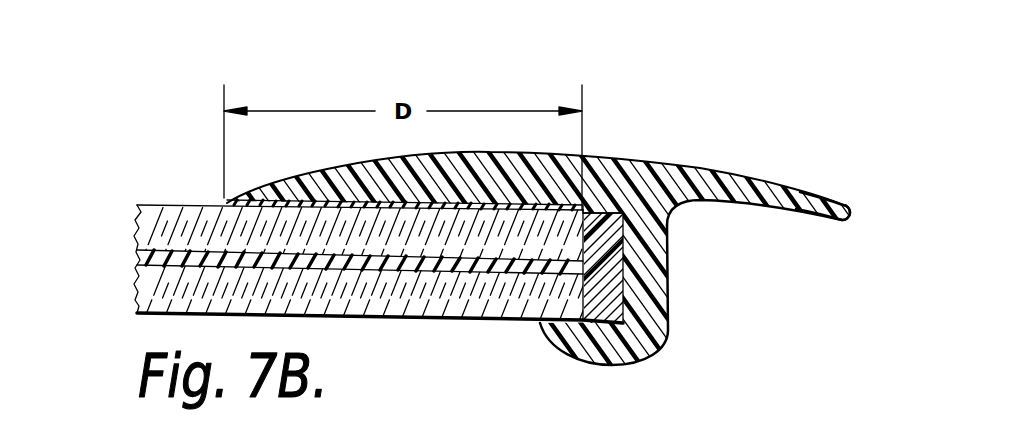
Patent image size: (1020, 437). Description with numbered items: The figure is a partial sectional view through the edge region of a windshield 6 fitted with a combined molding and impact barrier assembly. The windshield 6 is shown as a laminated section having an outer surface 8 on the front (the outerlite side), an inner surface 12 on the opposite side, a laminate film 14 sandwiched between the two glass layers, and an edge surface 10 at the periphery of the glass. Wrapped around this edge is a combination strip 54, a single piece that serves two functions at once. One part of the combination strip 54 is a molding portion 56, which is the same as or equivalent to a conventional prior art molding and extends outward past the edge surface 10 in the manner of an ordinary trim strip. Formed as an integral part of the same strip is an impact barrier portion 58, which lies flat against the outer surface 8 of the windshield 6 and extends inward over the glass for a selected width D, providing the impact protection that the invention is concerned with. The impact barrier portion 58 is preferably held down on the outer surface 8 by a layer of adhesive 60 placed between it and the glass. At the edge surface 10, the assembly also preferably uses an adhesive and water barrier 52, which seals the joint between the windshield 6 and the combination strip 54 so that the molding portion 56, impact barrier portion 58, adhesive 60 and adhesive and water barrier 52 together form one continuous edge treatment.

The windshield 6 is at (170, 194).
The outer surface 8 is at (157, 234).
The inner surface 12 is at (140, 288).
The laminate film 14 is at (137, 262).
The edge surface 10 is at (625, 246).
The adhesive and water barrier 52 is at (603, 273).
The combination strip 54 is at (650, 162).
The molding portion 56 is at (800, 187).
The impact barrier portion 58 is at (377, 162).
The adhesive 60 is at (308, 183).